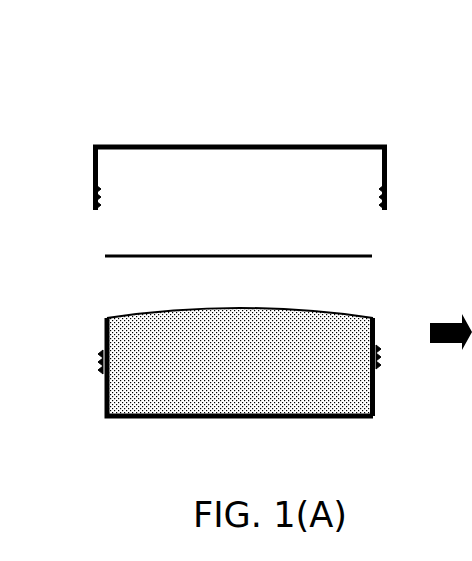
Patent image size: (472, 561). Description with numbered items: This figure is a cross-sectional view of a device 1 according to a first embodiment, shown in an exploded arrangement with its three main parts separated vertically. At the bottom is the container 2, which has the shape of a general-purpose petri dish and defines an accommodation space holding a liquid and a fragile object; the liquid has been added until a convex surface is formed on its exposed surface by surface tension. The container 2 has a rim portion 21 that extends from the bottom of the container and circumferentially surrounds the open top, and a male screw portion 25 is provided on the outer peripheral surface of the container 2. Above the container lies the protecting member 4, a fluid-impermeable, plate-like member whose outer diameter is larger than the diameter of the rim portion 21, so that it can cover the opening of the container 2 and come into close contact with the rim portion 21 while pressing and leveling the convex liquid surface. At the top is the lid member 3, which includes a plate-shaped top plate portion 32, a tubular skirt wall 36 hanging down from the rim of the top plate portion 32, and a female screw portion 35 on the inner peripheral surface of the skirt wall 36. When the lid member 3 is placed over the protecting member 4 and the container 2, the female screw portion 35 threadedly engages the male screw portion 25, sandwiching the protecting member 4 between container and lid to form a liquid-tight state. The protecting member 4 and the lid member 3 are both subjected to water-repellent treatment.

The device 1 is at (147, 48).
The container 2 is at (85, 357).
The lid member 3 is at (246, 134).
The protecting member 4 is at (98, 245).
The rim portion 21 is at (373, 318).
The male screw portion 25 is at (380, 362).
The top plate portion 32 is at (105, 143).
The female screw portion 35 is at (388, 195).
The tubular skirt wall 36 is at (388, 165).